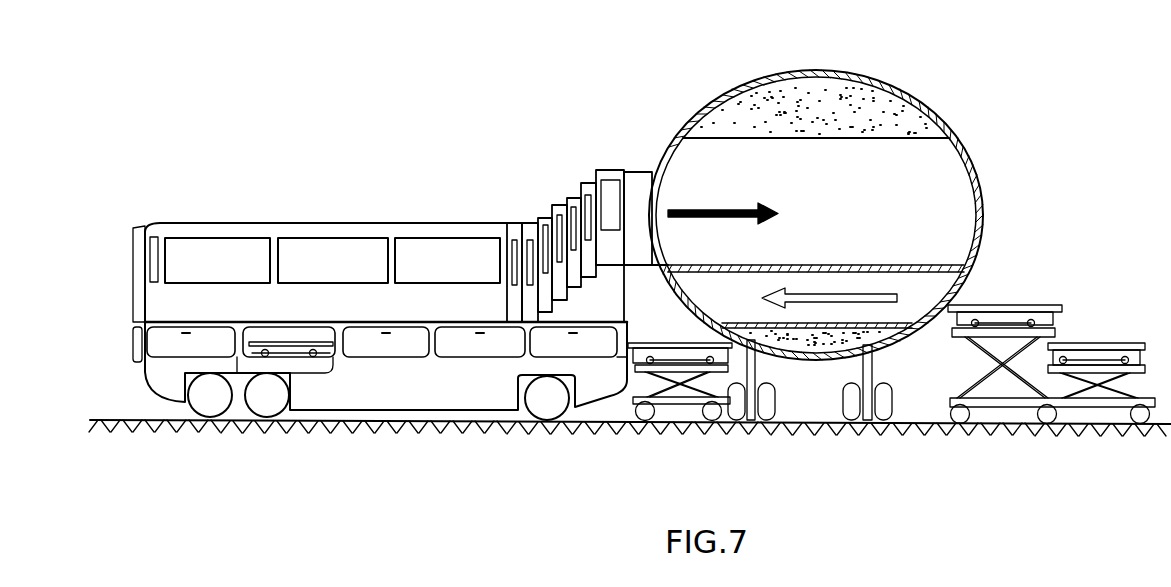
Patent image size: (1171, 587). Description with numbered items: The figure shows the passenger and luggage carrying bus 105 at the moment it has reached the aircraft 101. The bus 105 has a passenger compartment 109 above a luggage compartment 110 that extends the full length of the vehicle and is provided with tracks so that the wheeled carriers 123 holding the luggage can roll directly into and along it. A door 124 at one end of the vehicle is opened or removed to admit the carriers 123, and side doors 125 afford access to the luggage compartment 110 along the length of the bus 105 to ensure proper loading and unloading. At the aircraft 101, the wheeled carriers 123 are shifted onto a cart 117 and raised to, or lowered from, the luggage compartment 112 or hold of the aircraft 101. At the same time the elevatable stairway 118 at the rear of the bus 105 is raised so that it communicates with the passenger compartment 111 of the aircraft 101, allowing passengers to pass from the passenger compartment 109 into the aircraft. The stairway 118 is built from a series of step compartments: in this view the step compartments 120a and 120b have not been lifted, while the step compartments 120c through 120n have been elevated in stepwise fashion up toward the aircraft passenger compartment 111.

The aircraft 101 is at (890, 83).
The bus 105 is at (290, 222).
The passenger compartment 109 is at (205, 265).
The luggage compartment 110 is at (317, 335).
The passenger compartment of the aircraft 111 is at (943, 183).
The luggage compartment of the aircraft 112 is at (927, 290).
The cart 117 is at (680, 398).
The elevatable stairway 118 is at (572, 205).
The step compartment 120a is at (510, 240).
The step compartment 120b is at (527, 240).
The step compartment 120c is at (545, 225).
The step compartment 120n is at (612, 200).
The wheeled carriers 123 is at (283, 350).
The door 124 is at (135, 345).
The side doors 125 is at (207, 342).